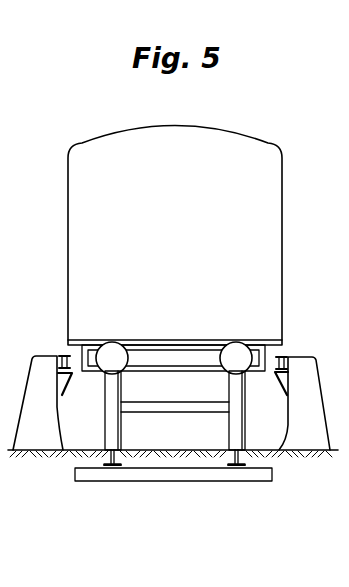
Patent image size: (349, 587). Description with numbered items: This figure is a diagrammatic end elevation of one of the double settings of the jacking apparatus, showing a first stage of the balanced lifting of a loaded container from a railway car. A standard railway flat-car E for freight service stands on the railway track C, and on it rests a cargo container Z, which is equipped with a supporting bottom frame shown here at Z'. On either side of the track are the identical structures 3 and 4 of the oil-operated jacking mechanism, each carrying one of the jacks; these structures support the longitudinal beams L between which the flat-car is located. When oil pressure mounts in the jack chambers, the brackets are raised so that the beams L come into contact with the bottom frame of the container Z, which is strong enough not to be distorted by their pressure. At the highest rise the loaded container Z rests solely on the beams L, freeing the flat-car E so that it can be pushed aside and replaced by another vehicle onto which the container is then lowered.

The cargo container Z is at (175, 236).
The underframe of car body Z' is at (204, 328).
The beams L is at (63, 357).
The railway flat-car E is at (181, 398).
The railway track C is at (160, 482).
The structure 3 is at (302, 403).
The structure 4 is at (42, 403).